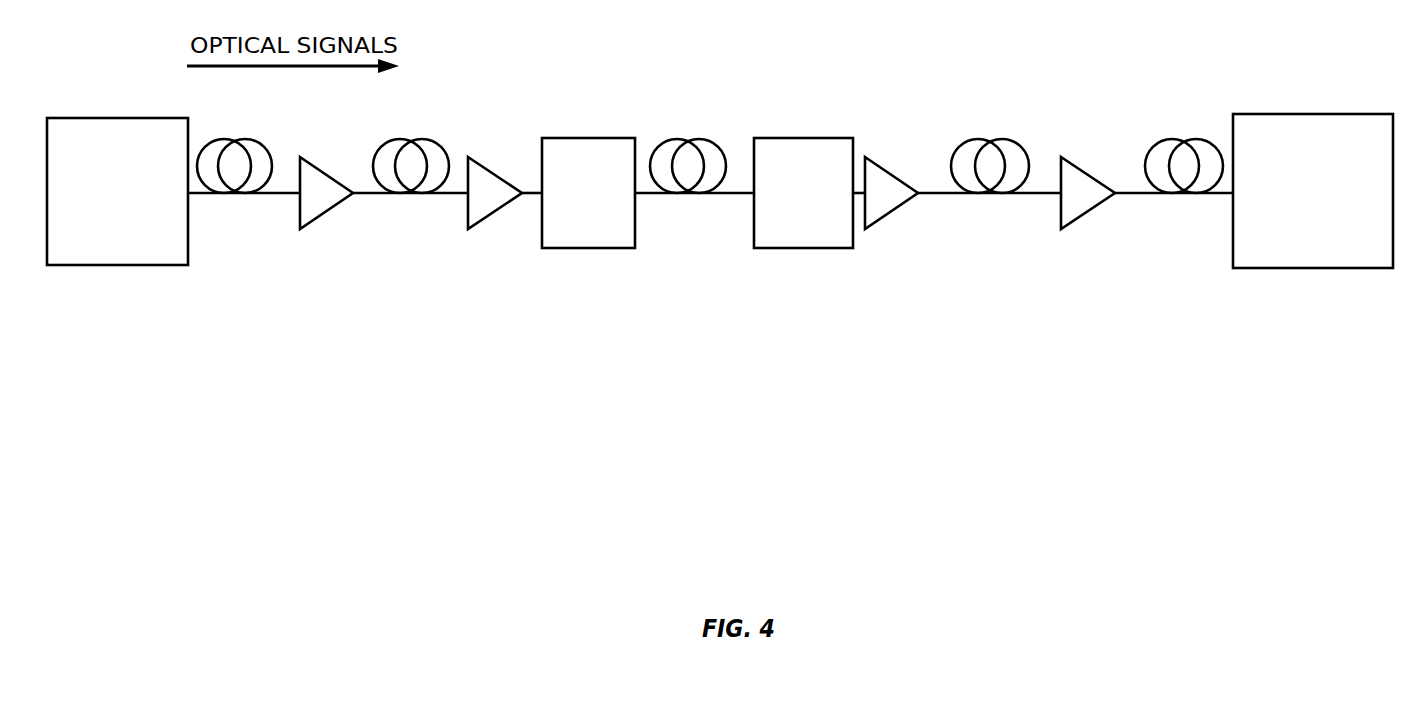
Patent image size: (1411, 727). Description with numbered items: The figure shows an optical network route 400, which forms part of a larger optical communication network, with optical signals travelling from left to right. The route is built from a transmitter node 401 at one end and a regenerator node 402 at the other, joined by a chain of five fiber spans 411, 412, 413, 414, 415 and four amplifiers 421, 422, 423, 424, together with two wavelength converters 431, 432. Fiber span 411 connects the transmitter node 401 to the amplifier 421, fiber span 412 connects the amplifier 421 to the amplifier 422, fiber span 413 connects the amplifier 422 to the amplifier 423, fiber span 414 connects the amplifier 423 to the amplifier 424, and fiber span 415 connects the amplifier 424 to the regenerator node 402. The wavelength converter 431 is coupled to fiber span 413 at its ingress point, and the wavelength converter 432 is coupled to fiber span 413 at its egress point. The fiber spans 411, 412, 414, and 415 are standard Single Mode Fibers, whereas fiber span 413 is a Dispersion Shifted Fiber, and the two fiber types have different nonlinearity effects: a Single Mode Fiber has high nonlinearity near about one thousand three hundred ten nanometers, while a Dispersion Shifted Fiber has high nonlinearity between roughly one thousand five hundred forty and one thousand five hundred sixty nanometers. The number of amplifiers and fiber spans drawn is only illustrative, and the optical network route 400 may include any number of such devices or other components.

The optical network route 400 is at (243, 397).
The transmitter node 401 is at (97, 232).
The regenerator node 402 is at (1293, 250).
The fiber span 411 is at (232, 194).
The fiber span 412 is at (398, 194).
The fiber span 413 is at (688, 194).
The fiber span 414 is at (990, 194).
The fiber span 415 is at (1175, 194).
The amplifier 421 is at (304, 160).
The amplifier 422 is at (472, 160).
The amplifier 423 is at (880, 162).
The amplifier 424 is at (1083, 172).
The wavelength converter 431 is at (568, 241).
The wavelength converter 432 is at (824, 241).